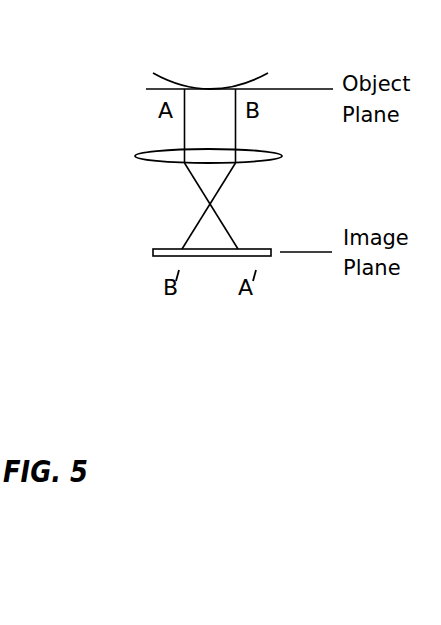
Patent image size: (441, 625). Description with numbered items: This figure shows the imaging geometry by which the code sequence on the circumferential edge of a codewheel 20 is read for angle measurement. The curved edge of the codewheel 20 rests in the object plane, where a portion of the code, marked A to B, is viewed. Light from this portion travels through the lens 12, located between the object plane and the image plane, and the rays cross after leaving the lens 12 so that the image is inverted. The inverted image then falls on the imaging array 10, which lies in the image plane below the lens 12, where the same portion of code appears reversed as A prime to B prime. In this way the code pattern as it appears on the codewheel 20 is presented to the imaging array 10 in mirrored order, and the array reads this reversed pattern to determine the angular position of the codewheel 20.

The codewheel 20 is at (248, 70).
The lens 12 is at (123, 155).
The imaging array 10 is at (142, 254).